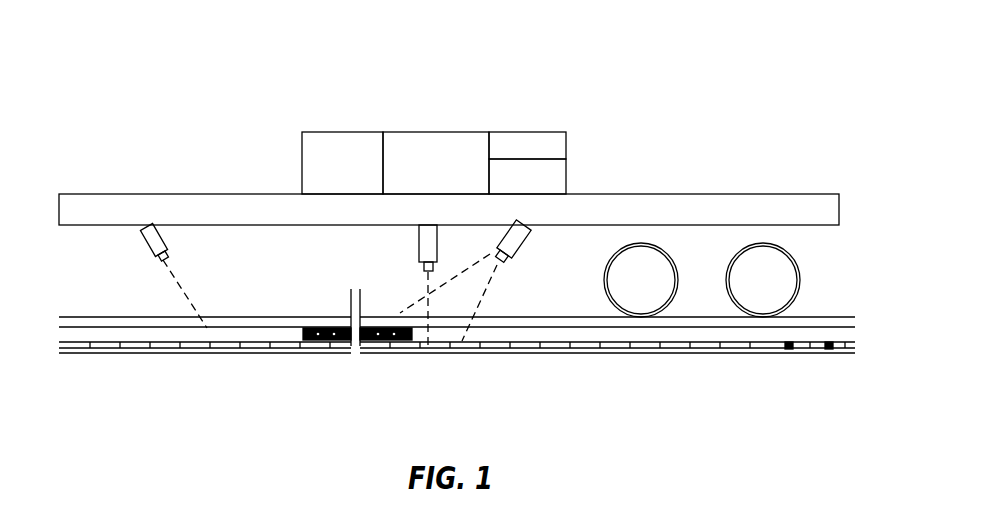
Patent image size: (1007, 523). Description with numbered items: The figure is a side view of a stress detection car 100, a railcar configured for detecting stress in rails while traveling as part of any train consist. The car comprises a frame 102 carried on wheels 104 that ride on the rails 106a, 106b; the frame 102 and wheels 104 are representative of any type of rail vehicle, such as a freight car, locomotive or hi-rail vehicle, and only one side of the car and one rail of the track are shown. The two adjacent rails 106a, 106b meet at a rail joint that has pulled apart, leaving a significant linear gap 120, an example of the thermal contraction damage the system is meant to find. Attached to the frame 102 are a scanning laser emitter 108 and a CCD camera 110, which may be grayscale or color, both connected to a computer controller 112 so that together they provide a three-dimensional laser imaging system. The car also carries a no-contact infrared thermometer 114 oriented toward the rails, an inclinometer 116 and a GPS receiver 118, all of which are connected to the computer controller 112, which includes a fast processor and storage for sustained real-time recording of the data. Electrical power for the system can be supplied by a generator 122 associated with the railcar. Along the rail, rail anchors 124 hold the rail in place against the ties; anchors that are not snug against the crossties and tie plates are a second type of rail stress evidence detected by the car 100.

The stress detection car 100 is at (236, 90).
The frame 102 is at (648, 204).
The wheels 104 is at (756, 298).
The rail 106a is at (537, 340).
The rail 106b is at (115, 343).
The scanning laser emitter 108 is at (421, 243).
The CCD camera 110 is at (521, 242).
The computer controller 112 is at (436, 163).
The no-contact infrared thermometer 114 is at (162, 250).
The inclinometer 116 is at (527, 176).
The GPS receiver 118 is at (527, 145).
The linear gap 120 is at (362, 295).
The generator 122 is at (342, 163).
The rail anchors 124 is at (829, 350).